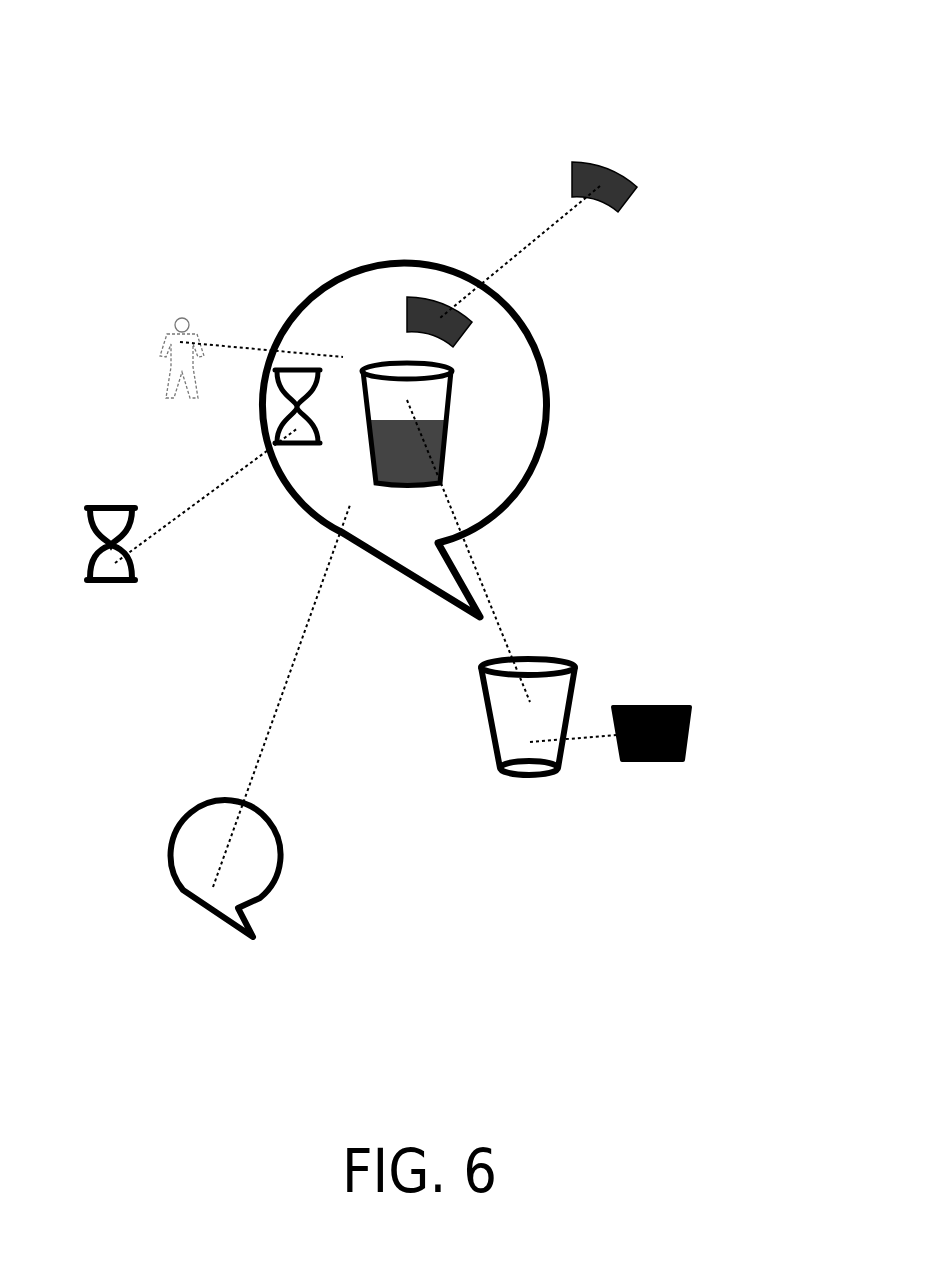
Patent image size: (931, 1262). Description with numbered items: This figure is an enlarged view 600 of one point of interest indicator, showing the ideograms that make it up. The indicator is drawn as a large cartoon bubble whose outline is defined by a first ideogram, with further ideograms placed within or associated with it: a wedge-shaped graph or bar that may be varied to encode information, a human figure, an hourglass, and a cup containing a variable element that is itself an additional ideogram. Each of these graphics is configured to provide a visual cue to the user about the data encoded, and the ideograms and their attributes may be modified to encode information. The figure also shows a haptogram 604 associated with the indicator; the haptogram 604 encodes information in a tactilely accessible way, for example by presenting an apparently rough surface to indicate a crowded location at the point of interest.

The enlarged view 600 is at (693, 56).
The haptogram 604 is at (508, 437).